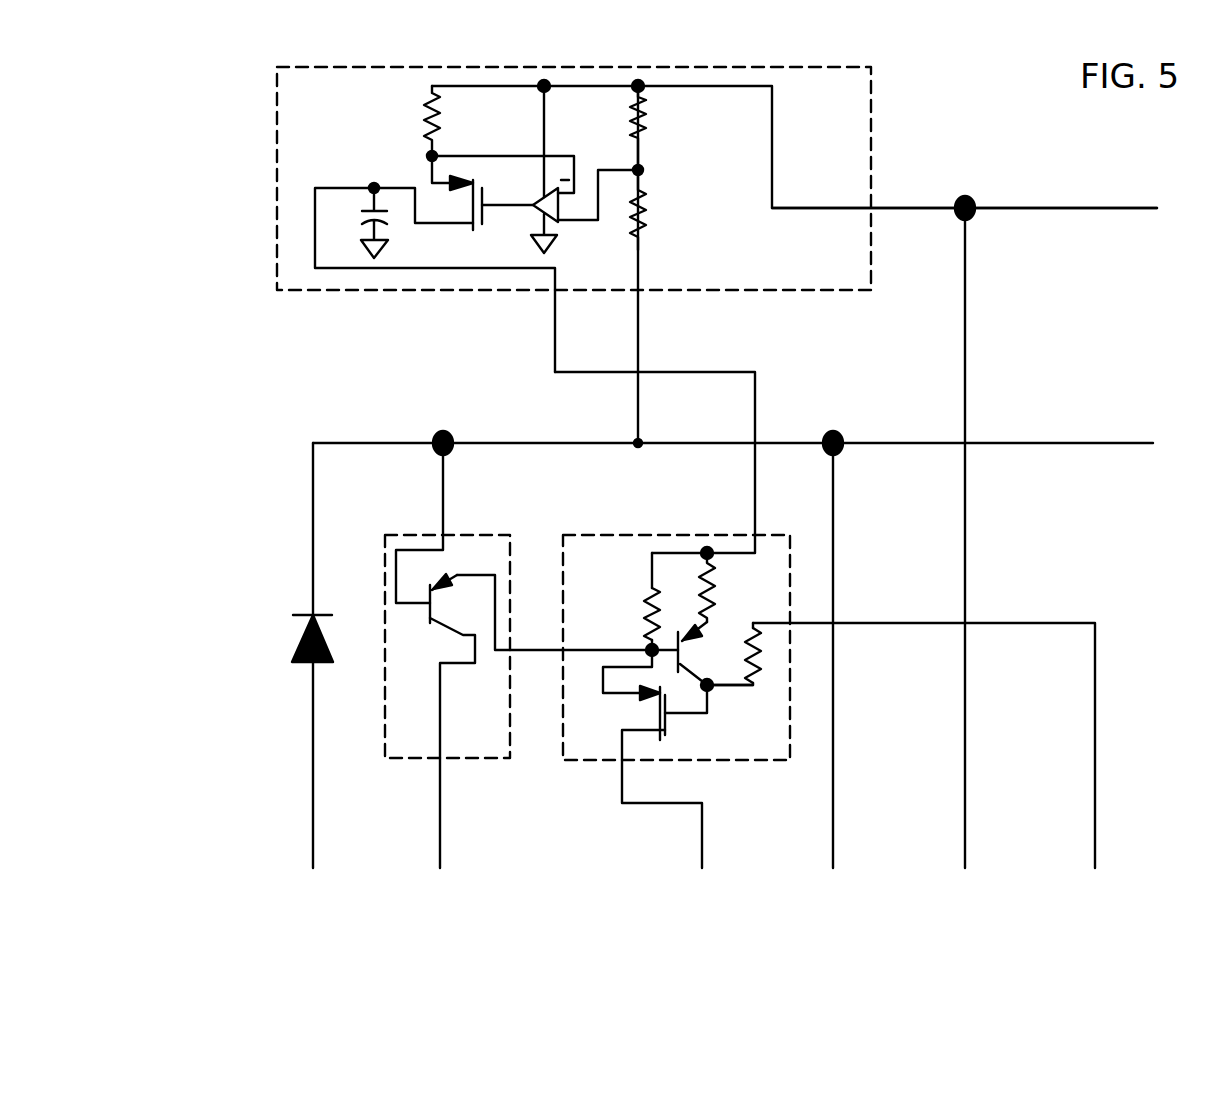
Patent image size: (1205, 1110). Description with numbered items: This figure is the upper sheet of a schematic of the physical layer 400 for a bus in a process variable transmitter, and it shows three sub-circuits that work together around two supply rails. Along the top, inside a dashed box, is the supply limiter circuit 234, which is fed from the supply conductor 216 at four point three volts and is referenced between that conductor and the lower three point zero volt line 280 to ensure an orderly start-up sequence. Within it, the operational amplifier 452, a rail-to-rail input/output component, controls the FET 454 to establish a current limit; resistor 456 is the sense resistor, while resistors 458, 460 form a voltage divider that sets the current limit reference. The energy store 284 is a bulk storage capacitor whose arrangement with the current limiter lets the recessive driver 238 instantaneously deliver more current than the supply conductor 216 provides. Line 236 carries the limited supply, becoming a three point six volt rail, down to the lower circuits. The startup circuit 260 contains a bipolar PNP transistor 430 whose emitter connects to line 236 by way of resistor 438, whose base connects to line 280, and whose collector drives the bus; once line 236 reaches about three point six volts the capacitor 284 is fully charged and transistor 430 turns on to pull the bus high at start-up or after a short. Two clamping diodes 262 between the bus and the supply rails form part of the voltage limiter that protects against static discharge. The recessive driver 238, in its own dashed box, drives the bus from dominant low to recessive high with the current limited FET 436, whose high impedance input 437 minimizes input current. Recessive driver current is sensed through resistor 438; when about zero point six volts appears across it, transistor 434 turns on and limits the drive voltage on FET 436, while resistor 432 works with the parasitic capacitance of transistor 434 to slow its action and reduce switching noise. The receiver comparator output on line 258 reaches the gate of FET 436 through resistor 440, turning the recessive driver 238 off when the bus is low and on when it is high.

The physical layer 400 is at (195, 148).
The supply limiter circuit 234 is at (872, 92).
The line 236 is at (555, 322).
The recessive driver 238 is at (588, 762).
The startup circuit 260 is at (415, 535).
The supply conductor 216 is at (1083, 208).
The line 280 is at (980, 443).
The line 258 is at (993, 623).
The clamping diodes 262 is at (300, 632).
The energy store 284 is at (367, 210).
The resistor 456 is at (430, 110).
The resistor 458 is at (645, 112).
The resistor 460 is at (648, 210).
The operational amplifier 452 is at (552, 218).
The FET 454 is at (486, 208).
The PNP transistor 430 is at (428, 615).
The resistor 432 is at (712, 585).
The transistor 434 is at (692, 645).
The FET 436 is at (665, 728).
The high impedance input 437 is at (733, 687).
The resistor 438 is at (645, 620).
The resistor 440 is at (758, 650).